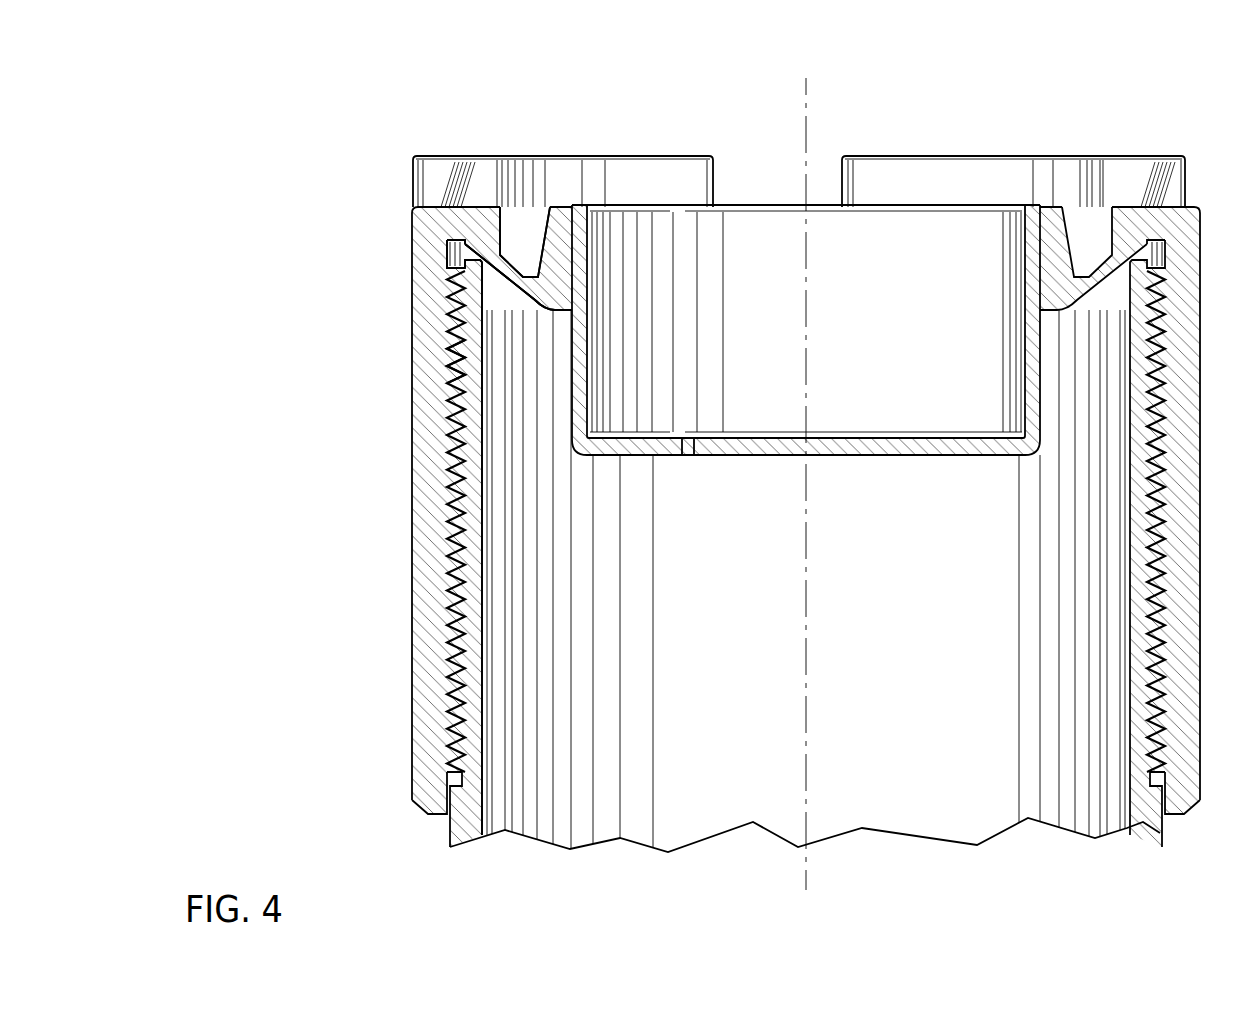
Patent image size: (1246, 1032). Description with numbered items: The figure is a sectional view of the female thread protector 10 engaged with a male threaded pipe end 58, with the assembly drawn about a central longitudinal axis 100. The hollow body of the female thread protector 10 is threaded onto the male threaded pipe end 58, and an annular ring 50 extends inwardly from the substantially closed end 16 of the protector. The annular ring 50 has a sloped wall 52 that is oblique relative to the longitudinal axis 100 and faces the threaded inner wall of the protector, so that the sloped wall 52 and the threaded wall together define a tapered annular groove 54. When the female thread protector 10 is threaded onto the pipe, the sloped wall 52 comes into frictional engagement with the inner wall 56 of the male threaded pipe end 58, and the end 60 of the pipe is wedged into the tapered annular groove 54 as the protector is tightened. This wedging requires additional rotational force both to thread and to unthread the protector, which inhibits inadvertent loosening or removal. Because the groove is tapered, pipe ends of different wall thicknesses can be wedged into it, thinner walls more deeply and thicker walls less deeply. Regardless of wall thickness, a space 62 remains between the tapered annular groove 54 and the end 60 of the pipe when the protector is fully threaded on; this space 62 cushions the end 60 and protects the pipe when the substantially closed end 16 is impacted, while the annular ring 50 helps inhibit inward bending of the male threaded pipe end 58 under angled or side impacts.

The female thread protector 10 is at (346, 76).
The longitudinal axis 100 is at (810, 90).
The substantially closed end 16 is at (752, 203).
The annular ring 50 is at (537, 302).
The sloped wall 52 is at (530, 296).
The tapered annular groove 54 is at (452, 253).
The inner wall 56 is at (488, 436).
The male threaded pipe end 58 is at (455, 362).
The end 60 is at (472, 268).
The space 62 is at (466, 246).